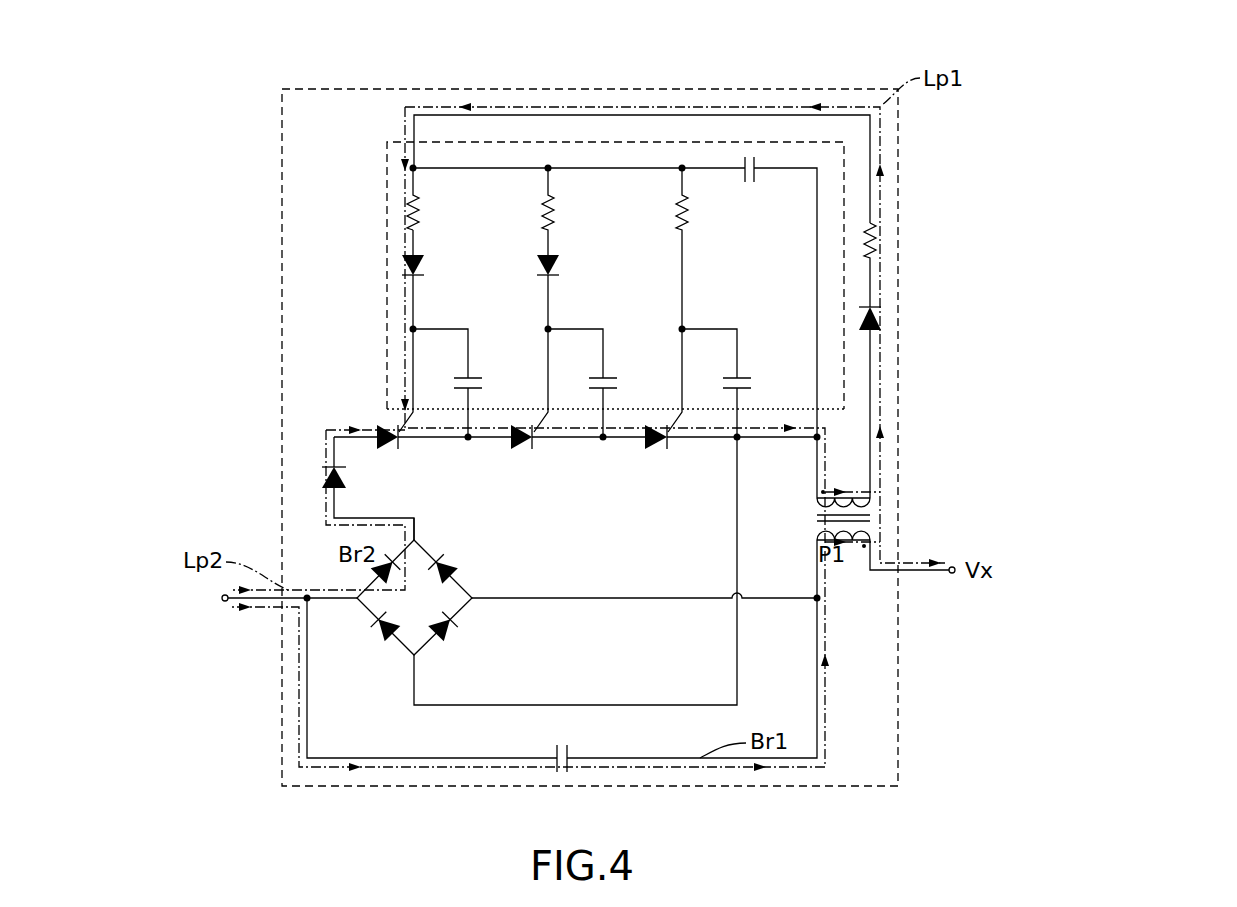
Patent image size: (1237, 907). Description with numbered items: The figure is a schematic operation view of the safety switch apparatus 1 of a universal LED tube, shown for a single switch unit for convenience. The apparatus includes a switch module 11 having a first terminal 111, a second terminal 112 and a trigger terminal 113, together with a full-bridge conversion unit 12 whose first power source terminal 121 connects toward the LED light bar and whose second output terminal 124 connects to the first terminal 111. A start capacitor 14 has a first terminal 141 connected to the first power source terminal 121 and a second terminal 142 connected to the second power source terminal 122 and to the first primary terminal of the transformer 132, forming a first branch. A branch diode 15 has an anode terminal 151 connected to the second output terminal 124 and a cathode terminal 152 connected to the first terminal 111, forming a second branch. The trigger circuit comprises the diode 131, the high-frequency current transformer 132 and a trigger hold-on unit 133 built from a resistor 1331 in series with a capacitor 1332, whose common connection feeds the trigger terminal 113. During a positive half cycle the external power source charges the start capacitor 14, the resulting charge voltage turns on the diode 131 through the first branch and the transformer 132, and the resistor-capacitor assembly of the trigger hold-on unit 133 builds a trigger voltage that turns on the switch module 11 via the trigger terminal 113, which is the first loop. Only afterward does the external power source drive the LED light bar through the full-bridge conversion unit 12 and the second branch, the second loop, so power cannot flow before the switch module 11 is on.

The safety switch apparatus 1 is at (576, 47).
The switch module 11 is at (559, 437).
The first terminal 111 is at (370, 428).
The second terminal 112 is at (415, 442).
The trigger terminal 113 is at (398, 422).
The full-bridge conversion unit 12 is at (519, 571).
The first power source terminal 121 is at (345, 590).
The second power source terminal 122 is at (478, 598).
The second output terminal 124 is at (420, 532).
The diode 131 is at (886, 318).
The transformer 132 is at (878, 518).
The trigger hold-on unit 133 is at (584, 275).
The resistor 1331 is at (418, 215).
The capacitor 1332 is at (482, 384).
The start capacitor 14 is at (565, 739).
The first terminal 141 is at (545, 758).
The second terminal 142 is at (575, 758).
The branch diode 15 is at (320, 480).
The anode terminal 151 is at (320, 500).
The cathode terminal 152 is at (324, 462).